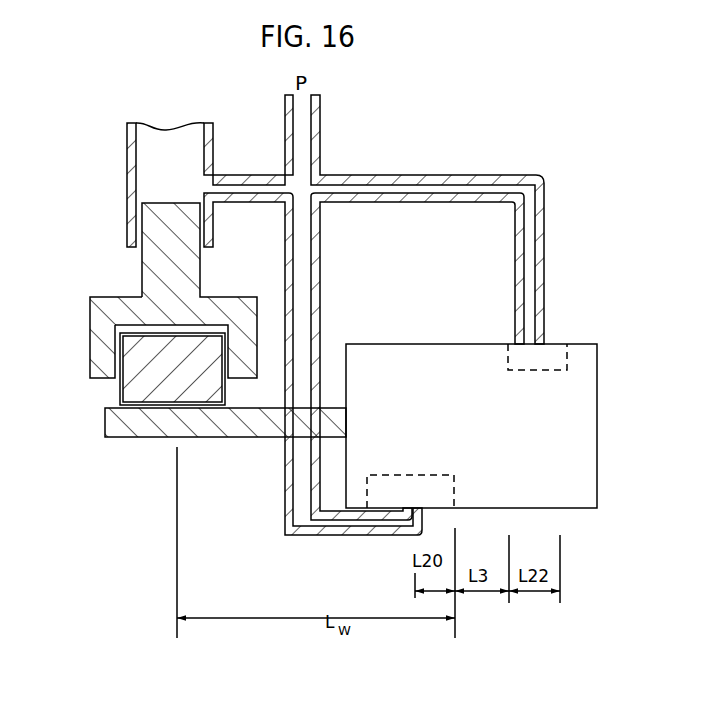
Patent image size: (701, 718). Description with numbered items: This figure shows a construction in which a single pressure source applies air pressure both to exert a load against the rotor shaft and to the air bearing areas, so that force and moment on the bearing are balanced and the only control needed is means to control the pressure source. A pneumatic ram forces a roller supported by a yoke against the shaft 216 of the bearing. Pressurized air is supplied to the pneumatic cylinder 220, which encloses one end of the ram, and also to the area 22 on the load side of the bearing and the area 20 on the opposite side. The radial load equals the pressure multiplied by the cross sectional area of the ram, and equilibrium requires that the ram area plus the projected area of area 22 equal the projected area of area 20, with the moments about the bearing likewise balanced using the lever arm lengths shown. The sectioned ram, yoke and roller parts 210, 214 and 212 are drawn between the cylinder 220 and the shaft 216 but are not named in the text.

The pneumatic cylinder 220 is at (143, 163).
The support block 210 is at (148, 270).
The side leg of support block 214 is at (100, 317).
The insert block 212 is at (125, 390).
The shaft 216 is at (120, 432).
The area on the load side of the bearing 22 is at (546, 368).
The area on the opposite side of the bearing 20 is at (422, 503).